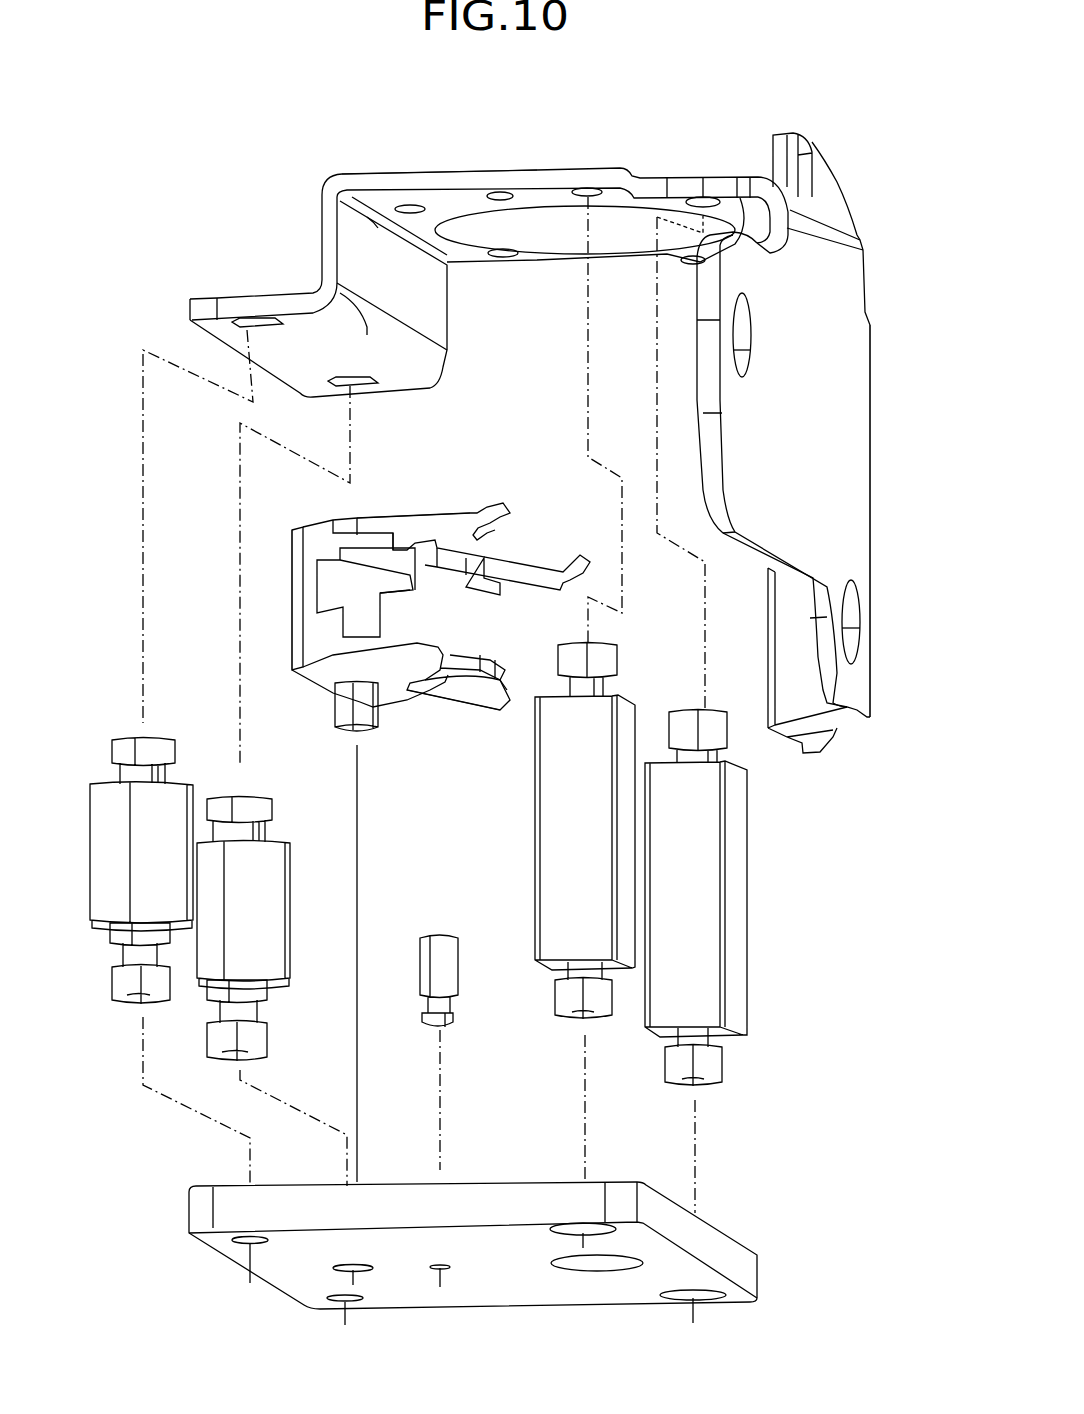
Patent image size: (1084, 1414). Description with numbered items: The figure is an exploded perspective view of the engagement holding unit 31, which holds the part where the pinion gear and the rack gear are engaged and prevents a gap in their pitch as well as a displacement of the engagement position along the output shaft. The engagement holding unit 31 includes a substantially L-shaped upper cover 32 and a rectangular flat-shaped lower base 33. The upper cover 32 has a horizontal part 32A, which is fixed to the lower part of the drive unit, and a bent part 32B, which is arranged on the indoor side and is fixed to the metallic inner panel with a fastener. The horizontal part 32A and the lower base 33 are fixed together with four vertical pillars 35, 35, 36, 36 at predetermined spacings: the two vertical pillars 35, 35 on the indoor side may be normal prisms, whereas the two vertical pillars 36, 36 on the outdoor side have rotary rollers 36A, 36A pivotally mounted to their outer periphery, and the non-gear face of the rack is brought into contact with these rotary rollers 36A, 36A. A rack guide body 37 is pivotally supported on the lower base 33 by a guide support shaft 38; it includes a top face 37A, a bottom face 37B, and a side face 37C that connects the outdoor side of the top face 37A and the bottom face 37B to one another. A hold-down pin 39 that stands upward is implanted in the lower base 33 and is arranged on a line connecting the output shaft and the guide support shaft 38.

The engagement holding unit 31 is at (196, 230).
The upper cover 32 is at (323, 192).
The horizontal part 32A is at (420, 170).
The bent part 32B is at (843, 450).
The lower base 33 is at (520, 1283).
The vertical pillar 35 is at (562, 860).
The vertical pillar 36 is at (120, 930).
The rotary roller 36A is at (107, 817).
The rack guide body 37 is at (317, 543).
The top face 37A is at (413, 527).
The bottom face 37B is at (447, 703).
The side face 37C is at (295, 580).
The guide support shaft 38 is at (368, 715).
The hold-down pin 39 is at (440, 952).